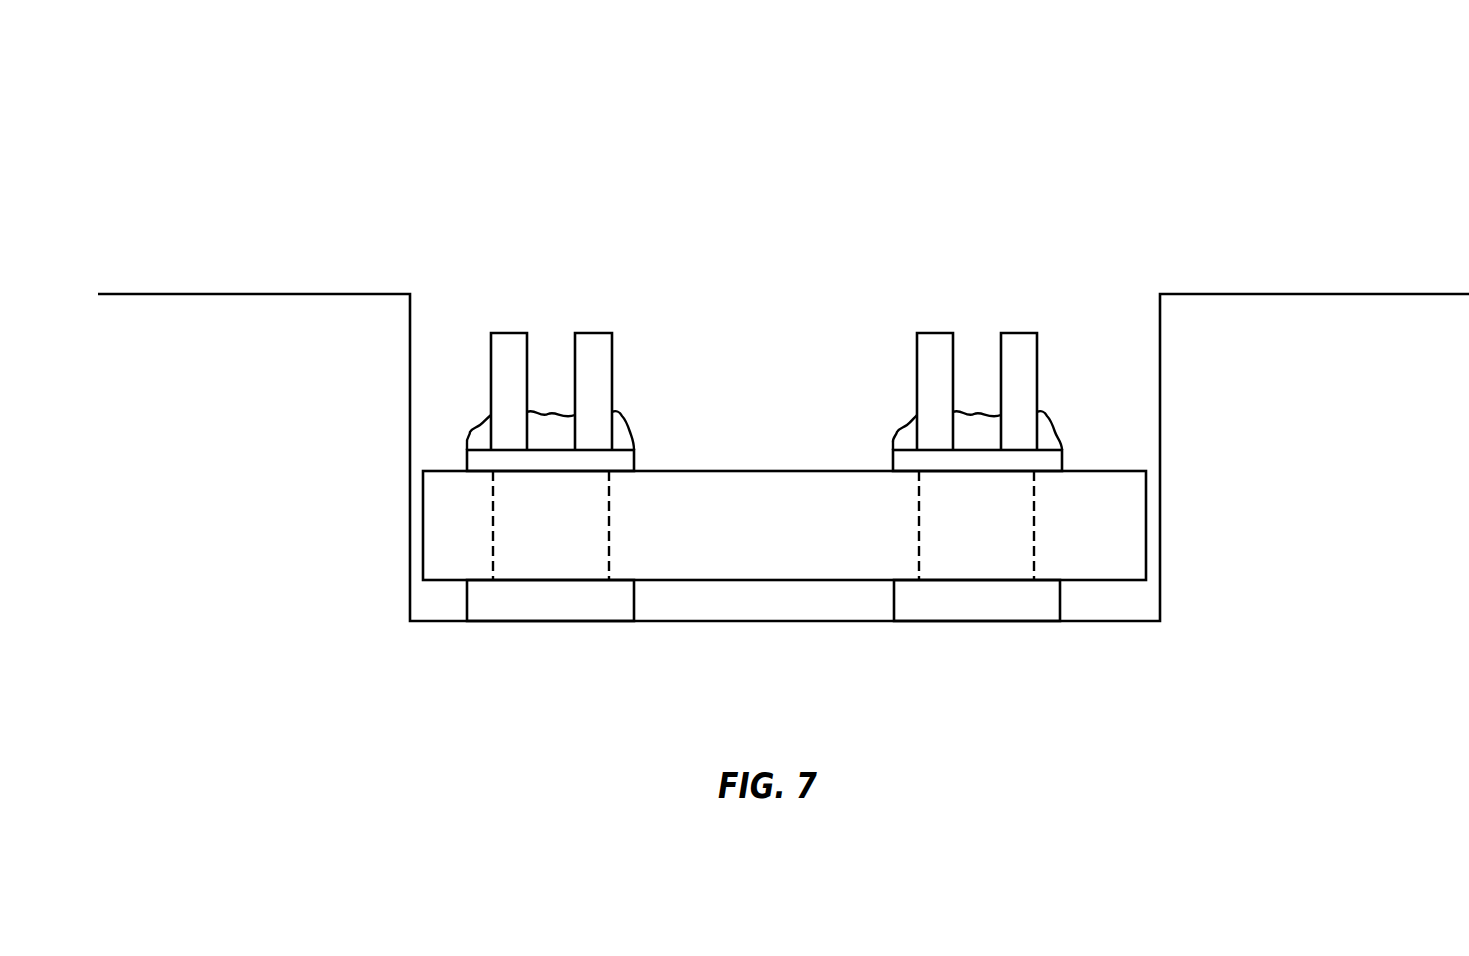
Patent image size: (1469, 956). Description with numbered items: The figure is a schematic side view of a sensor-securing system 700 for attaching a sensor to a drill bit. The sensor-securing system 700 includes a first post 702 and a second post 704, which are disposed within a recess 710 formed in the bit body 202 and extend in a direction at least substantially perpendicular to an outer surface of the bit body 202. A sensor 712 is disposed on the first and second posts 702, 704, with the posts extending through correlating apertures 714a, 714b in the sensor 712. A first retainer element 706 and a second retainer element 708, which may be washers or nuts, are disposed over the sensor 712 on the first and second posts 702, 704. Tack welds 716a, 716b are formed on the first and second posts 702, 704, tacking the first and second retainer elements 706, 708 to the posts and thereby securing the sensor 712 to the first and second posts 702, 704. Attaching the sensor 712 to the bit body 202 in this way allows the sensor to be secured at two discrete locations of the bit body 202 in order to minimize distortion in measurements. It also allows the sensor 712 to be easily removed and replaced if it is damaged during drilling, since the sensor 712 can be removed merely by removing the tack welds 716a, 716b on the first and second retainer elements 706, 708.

The sensor-securing system 700 is at (769, 184).
The bit body 202 is at (1310, 338).
The recess 710 is at (1110, 318).
The sensor 712 is at (745, 545).
The second post 704 is at (575, 602).
The first post 702 is at (997, 602).
The second retainer element 708 is at (623, 462).
The first retainer element 706 is at (1052, 460).
The aperture 714b is at (492, 520).
The aperture 714a is at (1034, 523).
The tack weld 716b is at (617, 432).
The tack weld 716a is at (1043, 428).